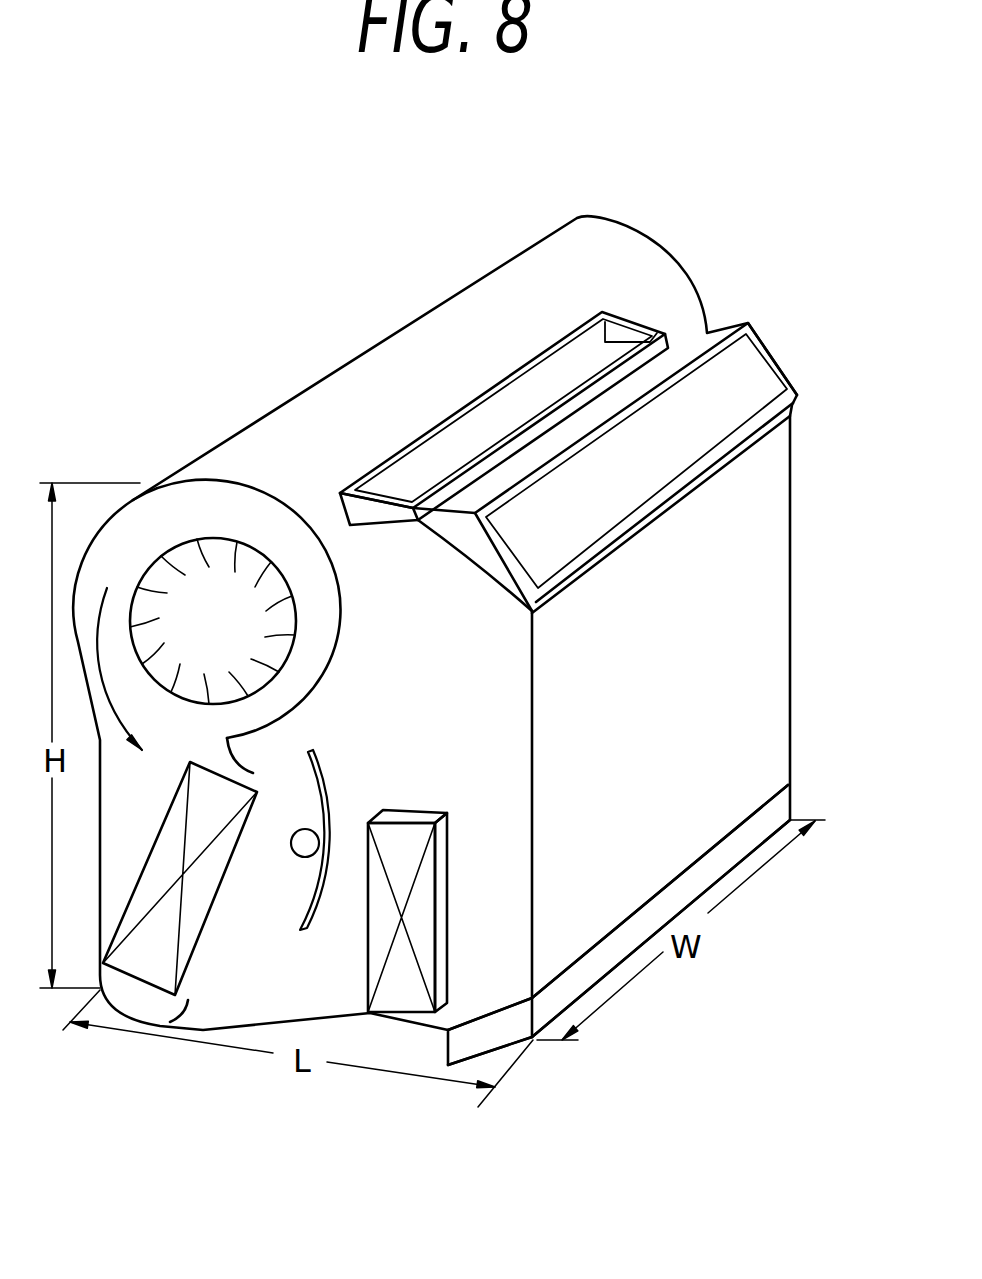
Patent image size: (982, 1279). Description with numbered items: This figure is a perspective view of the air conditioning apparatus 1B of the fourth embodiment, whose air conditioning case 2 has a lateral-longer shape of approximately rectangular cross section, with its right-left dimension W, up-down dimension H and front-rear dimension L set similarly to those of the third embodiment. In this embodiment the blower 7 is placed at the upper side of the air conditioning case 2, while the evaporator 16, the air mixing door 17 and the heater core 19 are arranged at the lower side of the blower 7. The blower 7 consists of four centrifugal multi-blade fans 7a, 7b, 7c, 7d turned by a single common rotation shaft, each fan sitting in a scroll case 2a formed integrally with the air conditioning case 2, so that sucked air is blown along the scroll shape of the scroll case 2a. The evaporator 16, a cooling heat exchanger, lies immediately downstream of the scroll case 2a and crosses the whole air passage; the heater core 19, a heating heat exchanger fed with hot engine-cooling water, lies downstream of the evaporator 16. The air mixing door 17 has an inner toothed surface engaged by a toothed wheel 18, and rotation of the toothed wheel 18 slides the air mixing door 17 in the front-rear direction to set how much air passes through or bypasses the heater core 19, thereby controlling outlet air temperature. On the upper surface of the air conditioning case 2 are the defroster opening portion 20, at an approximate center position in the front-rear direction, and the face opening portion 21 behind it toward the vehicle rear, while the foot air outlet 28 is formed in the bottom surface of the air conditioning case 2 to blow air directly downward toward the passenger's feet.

The air conditioning apparatus 1B is at (710, 284).
The air conditioning case 2 is at (790, 552).
The scroll case 2a is at (258, 487).
The blower 7 is at (207, 527).
The fan 7a is at (165, 553).
The fan 7b is at (155, 655).
The fan 7c is at (173, 566).
The fan 7d is at (263, 576).
The evaporator 16 is at (155, 965).
The air mixing door 17 is at (318, 912).
The toothed wheel 18 is at (305, 847).
The heater core 19 is at (408, 995).
The defroster opening portion 20 is at (448, 467).
The face opening portion 21 is at (722, 377).
The foot air outlet 28 is at (778, 820).